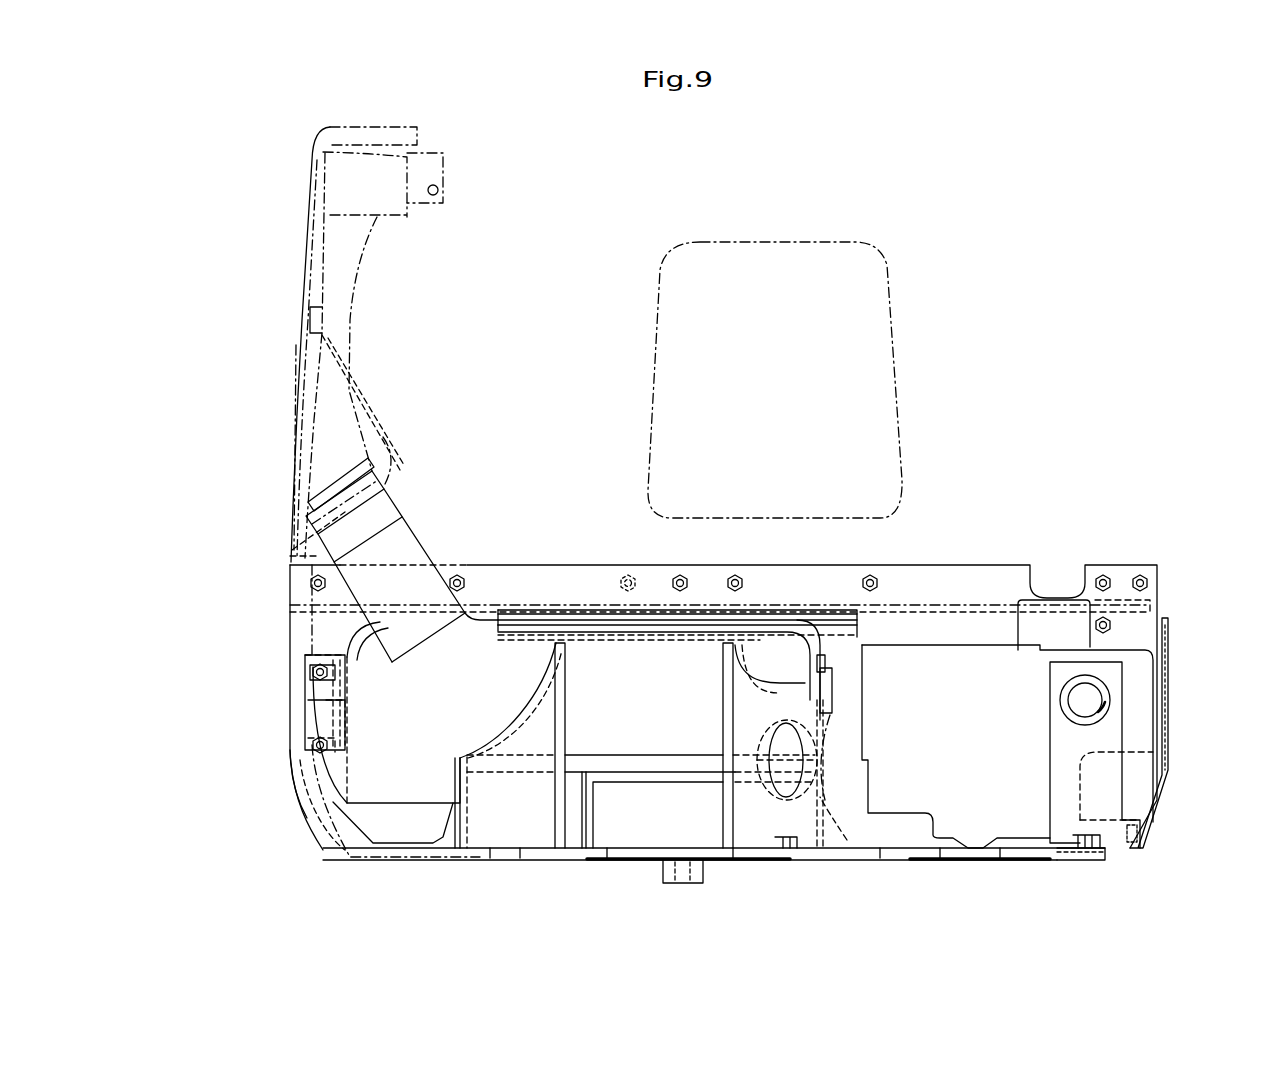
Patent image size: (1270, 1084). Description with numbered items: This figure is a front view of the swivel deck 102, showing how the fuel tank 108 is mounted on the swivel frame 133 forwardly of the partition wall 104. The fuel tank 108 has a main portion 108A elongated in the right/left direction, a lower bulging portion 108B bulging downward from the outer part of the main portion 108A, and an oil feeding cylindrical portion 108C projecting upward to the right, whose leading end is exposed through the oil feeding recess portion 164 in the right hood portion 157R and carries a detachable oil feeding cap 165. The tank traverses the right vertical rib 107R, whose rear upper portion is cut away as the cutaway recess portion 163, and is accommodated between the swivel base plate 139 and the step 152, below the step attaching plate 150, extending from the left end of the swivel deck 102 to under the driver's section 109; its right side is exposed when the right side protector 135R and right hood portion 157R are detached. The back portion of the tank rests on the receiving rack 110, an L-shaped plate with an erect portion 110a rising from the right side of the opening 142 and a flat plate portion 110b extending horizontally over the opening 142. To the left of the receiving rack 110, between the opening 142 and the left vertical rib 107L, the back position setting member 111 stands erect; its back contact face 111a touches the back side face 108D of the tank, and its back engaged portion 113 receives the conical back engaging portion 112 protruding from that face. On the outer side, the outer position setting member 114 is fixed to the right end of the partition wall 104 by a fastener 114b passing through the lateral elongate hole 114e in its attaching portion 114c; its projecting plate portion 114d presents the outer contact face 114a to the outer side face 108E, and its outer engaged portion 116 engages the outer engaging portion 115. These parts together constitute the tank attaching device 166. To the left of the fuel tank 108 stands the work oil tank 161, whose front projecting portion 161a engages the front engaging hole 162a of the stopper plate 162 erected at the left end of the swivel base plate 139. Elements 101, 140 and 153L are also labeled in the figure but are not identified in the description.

The image forming apparatus 101 is at (240, 145).
The swivel deck 102 is at (285, 290).
The partition wall 104 is at (975, 572).
The left vertical rib 107L is at (738, 818).
The right vertical rib 107R is at (545, 716).
The fuel tank 108 is at (345, 825).
The main portion 108A is at (523, 645).
The lower bulging portion 108B is at (398, 828).
The oil feeding cylindrical portion 108C is at (400, 545).
The back side face 108D is at (835, 712).
The outer side face 108E is at (315, 760).
The driver's section 109 is at (903, 378).
The receiving rack 110 is at (626, 790).
The erect portion 110a is at (583, 818).
The flat plate portion 110b is at (670, 772).
The back position setting member 111 is at (848, 852).
The back contact face 111a is at (797, 716).
The back engaging portion 112 is at (830, 705).
The back engaged portion 113 is at (835, 690).
The outer position setting member 114 is at (303, 655).
The outer contact face 114a is at (345, 740).
The fastener 114b is at (305, 668).
The attaching portion 114c is at (330, 660).
The projecting plate portion 114d is at (350, 632).
The lateral elongate hole 114e is at (340, 680).
The outer engaging portion 115 is at (305, 698).
The outer engaged portion 116 is at (340, 705).
The swivel frame 133 is at (1170, 520).
The right side protector 135R is at (290, 575).
The swivel base plate 139 is at (1112, 856).
The base plate 140 is at (1070, 855).
The opening 142 is at (740, 862).
The step attaching plate 150 is at (857, 625).
The step 152 is at (1150, 605).
The left side plate 153L is at (1165, 770).
The right hood portion 157R is at (290, 380).
The work oil tank 161 is at (1135, 670).
The front projecting portion 161a is at (1075, 700).
The stopper plate 162 is at (1050, 750).
The front engaging hole 162a is at (1108, 700).
The cutaway recess portion 163 is at (468, 795).
The oil feeding recess portion 164 is at (383, 447).
The oil feeding cap 165 is at (330, 490).
The tank attaching device 166 is at (280, 806).